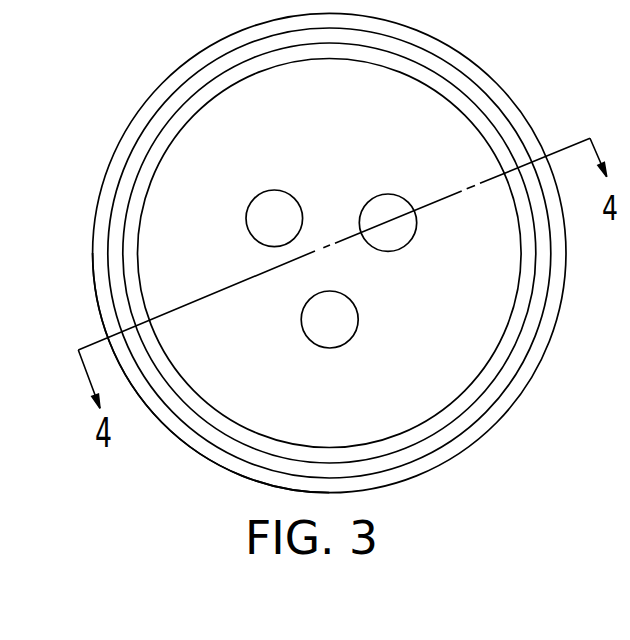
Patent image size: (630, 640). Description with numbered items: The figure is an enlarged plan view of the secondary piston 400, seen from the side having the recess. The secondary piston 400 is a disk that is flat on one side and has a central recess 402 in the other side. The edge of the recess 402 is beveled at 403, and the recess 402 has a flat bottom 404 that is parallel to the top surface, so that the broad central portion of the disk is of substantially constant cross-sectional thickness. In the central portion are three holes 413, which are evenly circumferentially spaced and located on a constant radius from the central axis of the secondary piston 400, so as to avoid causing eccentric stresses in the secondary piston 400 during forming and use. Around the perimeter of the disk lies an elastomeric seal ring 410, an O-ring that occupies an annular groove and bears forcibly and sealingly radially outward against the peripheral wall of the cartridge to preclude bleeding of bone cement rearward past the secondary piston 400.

The secondary piston 400 is at (216, 448).
The central recess 402 is at (232, 422).
The bevel 403 is at (253, 440).
The flat bottom 404 is at (273, 423).
The seal ring 410 is at (463, 445).
The holes 413 is at (302, 318).